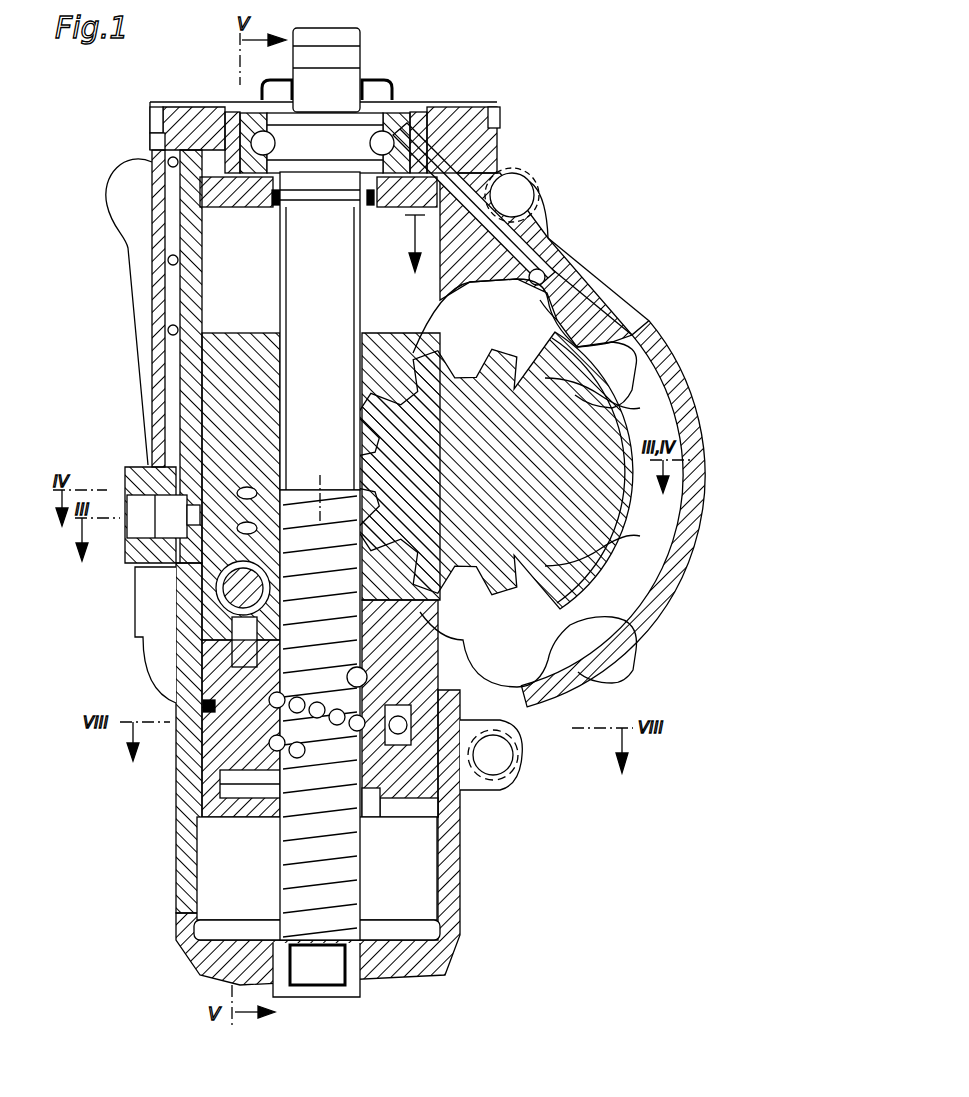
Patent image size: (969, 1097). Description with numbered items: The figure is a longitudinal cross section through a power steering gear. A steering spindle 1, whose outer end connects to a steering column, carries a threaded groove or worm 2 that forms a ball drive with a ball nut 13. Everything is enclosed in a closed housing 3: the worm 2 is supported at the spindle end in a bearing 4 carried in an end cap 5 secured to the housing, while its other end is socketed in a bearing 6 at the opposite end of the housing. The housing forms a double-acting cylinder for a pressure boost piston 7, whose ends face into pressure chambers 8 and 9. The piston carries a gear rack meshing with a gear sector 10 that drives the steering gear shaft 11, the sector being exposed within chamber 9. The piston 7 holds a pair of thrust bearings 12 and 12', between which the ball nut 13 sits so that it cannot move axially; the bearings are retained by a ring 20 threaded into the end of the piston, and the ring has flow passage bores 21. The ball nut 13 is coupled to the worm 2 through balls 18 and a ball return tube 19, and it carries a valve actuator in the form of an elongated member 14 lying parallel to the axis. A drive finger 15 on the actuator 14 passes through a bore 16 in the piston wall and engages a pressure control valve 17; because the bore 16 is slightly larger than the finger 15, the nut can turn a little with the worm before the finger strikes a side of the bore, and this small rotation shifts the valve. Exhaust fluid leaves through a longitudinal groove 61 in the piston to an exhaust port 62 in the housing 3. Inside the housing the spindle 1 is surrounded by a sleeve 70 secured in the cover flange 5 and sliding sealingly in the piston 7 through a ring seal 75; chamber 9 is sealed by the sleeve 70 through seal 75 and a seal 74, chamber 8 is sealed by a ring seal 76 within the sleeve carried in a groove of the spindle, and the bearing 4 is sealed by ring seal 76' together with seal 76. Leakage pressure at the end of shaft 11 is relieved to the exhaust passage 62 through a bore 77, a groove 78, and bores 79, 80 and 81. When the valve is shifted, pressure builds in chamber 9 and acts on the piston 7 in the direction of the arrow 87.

The steering spindle 1 is at (345, 72).
The steering worm 2 is at (305, 868).
The housing 3 is at (186, 823).
The bearing 4 is at (403, 105).
The end cap 5 is at (437, 133).
The bearing 6 is at (175, 937).
The pressure boost piston 7 is at (240, 362).
The cylinder pressure chamber 8 is at (240, 893).
The cylinder pressure chamber 9 is at (283, 333).
The gear sector 10 is at (482, 400).
The steering gear shaft 11 is at (578, 398).
The thrust bearing 12 is at (132, 720).
The thrust bearing 12' is at (165, 773).
The ball nut 13 is at (505, 757).
The elongated member 14 is at (230, 660).
The drive finger 15 is at (230, 600).
The bore 16 is at (232, 637).
The pressure control valve 17 is at (103, 583).
The balls 18 is at (440, 780).
The ball return tube 19 is at (470, 775).
The ring 20 is at (410, 817).
The flow passage bores 21 is at (395, 813).
The longitudinal groove 61 is at (215, 432).
The exhaust port 62 is at (145, 505).
The sleeve 70 is at (278, 268).
The seal 74 is at (235, 190).
The ring seal 75 is at (518, 258).
The ring seal 76 is at (114, 145).
The ring seal 76' is at (107, 120).
The bore 77 is at (225, 318).
The groove 78 is at (520, 175).
The bore 79 is at (500, 120).
The bore 80 is at (545, 290).
The bore 81 is at (545, 278).
The arrow 87 is at (503, 187).